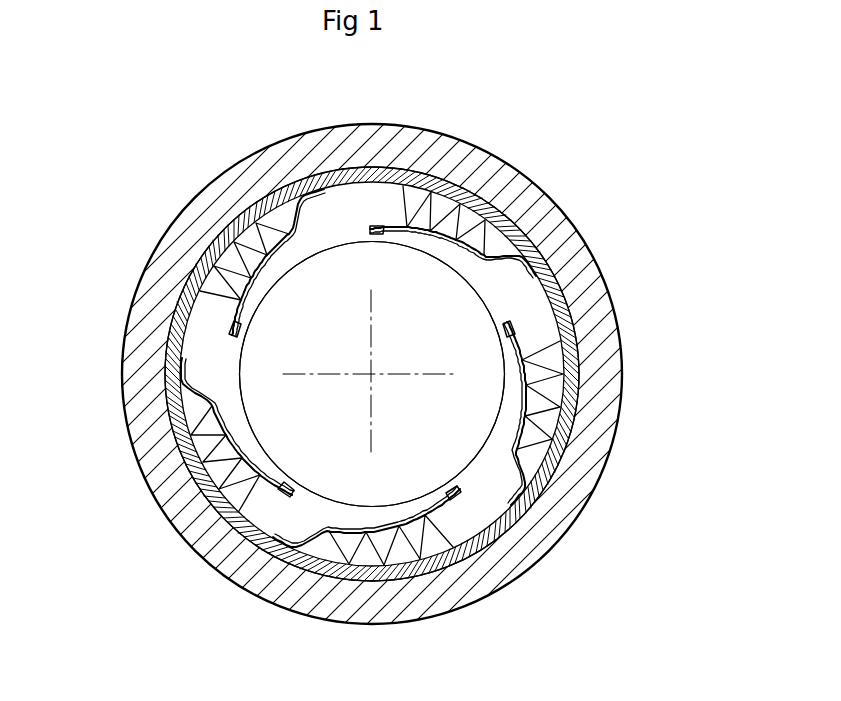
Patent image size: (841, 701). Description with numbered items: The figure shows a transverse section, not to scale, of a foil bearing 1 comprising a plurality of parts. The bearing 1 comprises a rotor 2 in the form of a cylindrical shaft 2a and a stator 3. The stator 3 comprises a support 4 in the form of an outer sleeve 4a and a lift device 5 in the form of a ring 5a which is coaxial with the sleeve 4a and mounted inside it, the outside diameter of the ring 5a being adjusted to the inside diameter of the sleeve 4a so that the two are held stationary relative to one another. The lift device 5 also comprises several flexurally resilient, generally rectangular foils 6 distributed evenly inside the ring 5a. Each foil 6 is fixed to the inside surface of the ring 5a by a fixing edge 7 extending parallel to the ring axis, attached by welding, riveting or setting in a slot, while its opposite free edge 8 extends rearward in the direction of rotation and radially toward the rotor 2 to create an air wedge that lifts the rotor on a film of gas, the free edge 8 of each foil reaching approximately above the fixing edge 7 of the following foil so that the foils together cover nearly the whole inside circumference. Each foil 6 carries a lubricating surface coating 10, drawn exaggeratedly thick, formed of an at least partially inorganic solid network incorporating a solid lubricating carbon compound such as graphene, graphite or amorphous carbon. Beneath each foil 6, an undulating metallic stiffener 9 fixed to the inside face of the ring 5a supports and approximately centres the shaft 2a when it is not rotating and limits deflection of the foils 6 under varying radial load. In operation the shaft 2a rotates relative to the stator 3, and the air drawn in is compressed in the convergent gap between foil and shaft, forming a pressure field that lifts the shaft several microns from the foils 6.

The bearing 1 is at (138, 212).
The rotor 2 is at (513, 292).
The shaft 2a is at (467, 307).
The stator 3 is at (105, 387).
The support 4 is at (618, 492).
The outer sleeve 4a is at (553, 528).
The lift device 5 is at (329, 213).
The ring 5a is at (580, 372).
The foil 6 is at (513, 507).
The fixing edge 7 is at (275, 538).
The free edge 8 is at (463, 487).
The stiffener 9 is at (372, 552).
The surface coating 10 is at (188, 460).